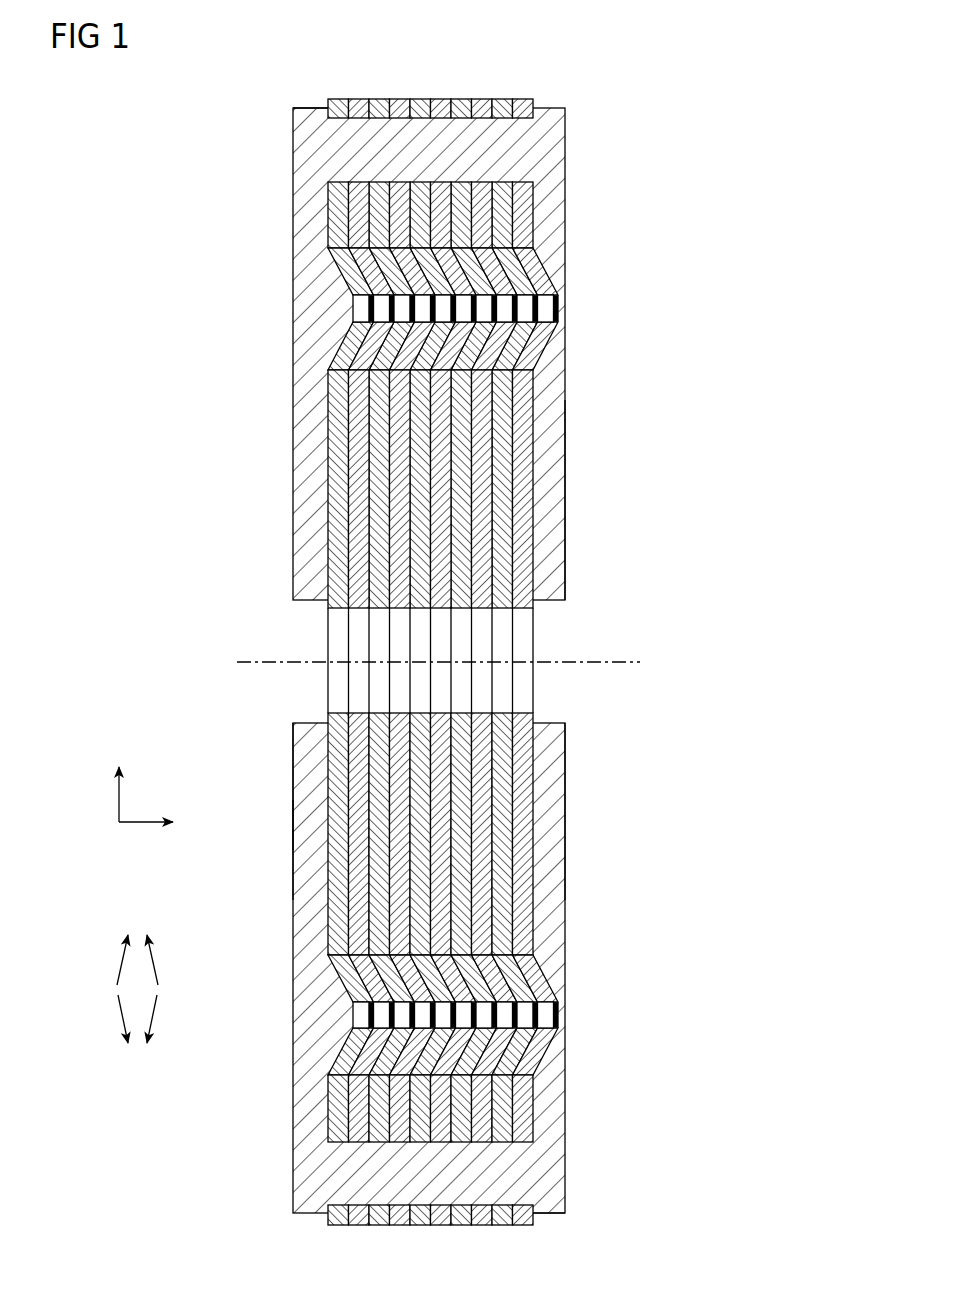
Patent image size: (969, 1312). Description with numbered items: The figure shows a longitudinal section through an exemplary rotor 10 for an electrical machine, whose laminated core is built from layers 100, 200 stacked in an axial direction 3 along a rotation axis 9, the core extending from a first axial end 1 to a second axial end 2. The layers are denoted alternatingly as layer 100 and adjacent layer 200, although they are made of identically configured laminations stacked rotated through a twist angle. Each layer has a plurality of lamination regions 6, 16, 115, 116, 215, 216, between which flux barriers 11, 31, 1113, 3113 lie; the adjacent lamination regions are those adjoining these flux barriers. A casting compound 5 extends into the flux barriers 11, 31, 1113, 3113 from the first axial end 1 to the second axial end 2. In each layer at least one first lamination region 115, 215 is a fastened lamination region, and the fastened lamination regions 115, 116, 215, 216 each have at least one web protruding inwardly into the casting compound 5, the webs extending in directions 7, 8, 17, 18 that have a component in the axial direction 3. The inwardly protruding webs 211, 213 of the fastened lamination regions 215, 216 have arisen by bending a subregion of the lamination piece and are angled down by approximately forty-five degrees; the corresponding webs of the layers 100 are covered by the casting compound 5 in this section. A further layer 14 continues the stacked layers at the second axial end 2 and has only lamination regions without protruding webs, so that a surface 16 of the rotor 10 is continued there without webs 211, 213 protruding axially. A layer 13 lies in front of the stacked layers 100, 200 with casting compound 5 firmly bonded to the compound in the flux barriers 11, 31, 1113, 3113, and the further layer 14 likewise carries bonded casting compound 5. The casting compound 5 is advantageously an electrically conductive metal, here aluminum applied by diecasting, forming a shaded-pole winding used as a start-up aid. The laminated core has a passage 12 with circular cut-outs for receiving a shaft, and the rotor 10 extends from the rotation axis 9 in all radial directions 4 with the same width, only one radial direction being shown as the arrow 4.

The first axial end 1 is at (314, 1228).
The second axial end 2 is at (551, 1228).
The axial direction 3 is at (143, 826).
The radial direction 4 is at (117, 800).
The casting compound 5 is at (293, 826).
The lamination region 6 is at (362, 123).
The direction 7 is at (117, 962).
The direction 8 is at (156, 962).
The rotation axis 9 is at (605, 668).
The rotor 10 is at (558, 63).
The flux barrier 11 is at (385, 150).
The passage 12 is at (337, 690).
The layer 13 is at (293, 762).
The further layer 14 is at (567, 770).
The surface 16 is at (570, 545).
The direction 17 is at (120, 1013).
The direction 18 is at (160, 1013).
The flux barrier 31 is at (385, 1174).
The layer 100 is at (381, 327).
The adjacent layer 200 is at (391, 311).
The fastened lamination region 115 is at (392, 583).
The fastened lamination region 116 is at (333, 236).
The fastened lamination region 215 is at (393, 540).
The fastened lamination region 216 is at (357, 210).
The inwardly protruding web 211 is at (370, 340).
The inwardly protruding web 213 is at (350, 268).
The flux barrier 1113 is at (550, 312).
The flux barrier 3113 is at (550, 1017).